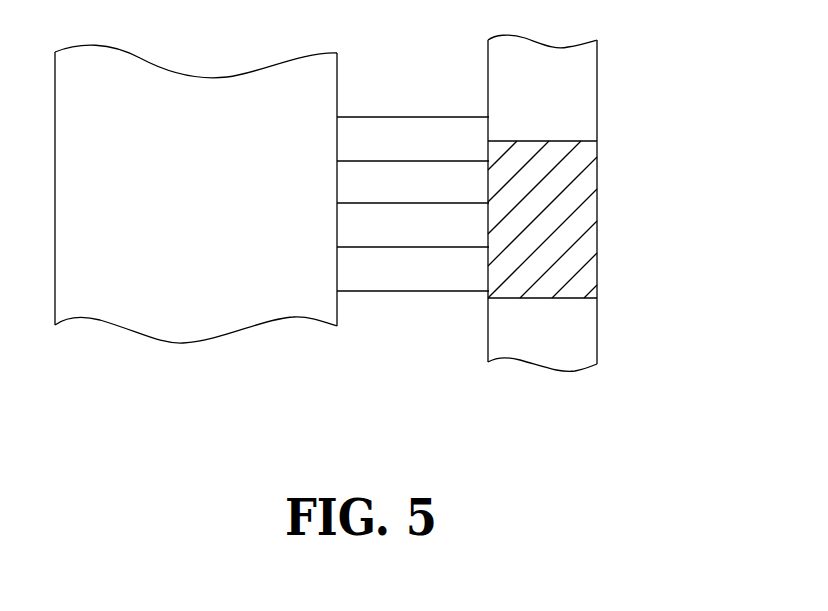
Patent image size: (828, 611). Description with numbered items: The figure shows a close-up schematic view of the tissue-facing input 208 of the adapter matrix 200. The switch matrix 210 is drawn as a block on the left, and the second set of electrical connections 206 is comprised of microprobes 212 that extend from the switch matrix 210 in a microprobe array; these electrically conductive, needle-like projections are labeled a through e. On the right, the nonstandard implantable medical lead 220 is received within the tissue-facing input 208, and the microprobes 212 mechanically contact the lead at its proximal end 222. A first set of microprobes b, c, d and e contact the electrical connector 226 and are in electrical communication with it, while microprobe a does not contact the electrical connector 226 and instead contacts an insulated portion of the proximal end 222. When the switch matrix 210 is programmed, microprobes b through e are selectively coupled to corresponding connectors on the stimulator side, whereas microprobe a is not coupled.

The adapter matrix 200 is at (364, 248).
The second set of electrical connections 206 is at (357, 99).
The tissue-facing input 208 is at (403, 248).
The switch matrix 210 is at (200, 211).
The microprobes 212 is at (419, 300).
The nonstandard implantable medical lead 220 is at (597, 342).
The proximal end 222 is at (597, 92).
The electrical connector 226 is at (597, 213).